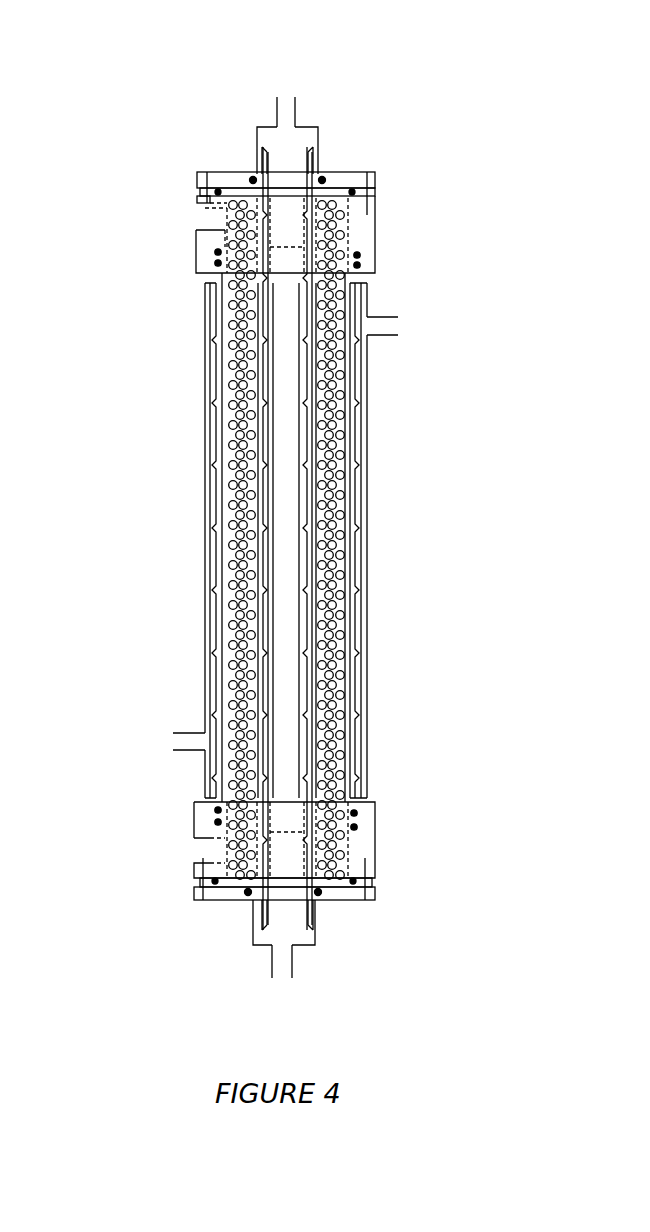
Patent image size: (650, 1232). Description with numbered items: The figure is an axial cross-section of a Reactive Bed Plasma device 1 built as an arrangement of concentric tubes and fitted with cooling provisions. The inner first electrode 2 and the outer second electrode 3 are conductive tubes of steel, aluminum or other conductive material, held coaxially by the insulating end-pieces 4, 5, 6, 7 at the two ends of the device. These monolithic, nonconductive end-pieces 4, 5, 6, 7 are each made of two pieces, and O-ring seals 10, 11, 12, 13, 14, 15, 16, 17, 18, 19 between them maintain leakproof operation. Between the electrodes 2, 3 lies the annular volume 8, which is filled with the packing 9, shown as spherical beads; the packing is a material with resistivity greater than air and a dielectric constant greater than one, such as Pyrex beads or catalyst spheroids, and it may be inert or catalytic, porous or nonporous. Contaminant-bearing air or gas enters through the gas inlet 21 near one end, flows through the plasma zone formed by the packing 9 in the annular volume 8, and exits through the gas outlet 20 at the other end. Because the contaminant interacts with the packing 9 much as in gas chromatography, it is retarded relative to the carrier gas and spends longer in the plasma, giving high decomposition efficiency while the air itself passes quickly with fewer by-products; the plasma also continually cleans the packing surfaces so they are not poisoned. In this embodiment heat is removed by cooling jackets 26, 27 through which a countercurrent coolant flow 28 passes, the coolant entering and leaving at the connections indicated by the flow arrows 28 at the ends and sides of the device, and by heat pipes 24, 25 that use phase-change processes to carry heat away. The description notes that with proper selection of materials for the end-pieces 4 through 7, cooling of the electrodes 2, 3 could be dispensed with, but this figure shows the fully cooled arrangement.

The plasma device 1 is at (430, 508).
The first electrode 2 is at (232, 502).
The second electrode 3 is at (227, 377).
The insulating end-piece 4 is at (194, 820).
The insulating end-piece 5 is at (197, 272).
The insulating end-piece 6 is at (230, 900).
The insulating end-piece 7 is at (228, 175).
The annular volume 8 is at (230, 598).
The packing 9 is at (230, 430).
The O-ring seal 10 is at (317, 900).
The O-ring seal 11 is at (322, 177).
The O-ring seal 12 is at (353, 885).
The O-ring seal 13 is at (372, 180).
The O-ring seal 14 is at (358, 828).
The O-ring seal 15 is at (360, 255).
The O-ring seal 16 is at (358, 813).
The O-ring seal 17 is at (360, 265).
The O-ring seal 18 is at (203, 867).
The O-ring seal 19 is at (207, 203).
The gas outlet 20 is at (193, 853).
The gas inlet 21 is at (170, 217).
The heat pipe 24 is at (303, 715).
The heat pipe 25 is at (358, 677).
The cooling jacket 26 is at (362, 622).
The cooling jacket 27 is at (287, 545).
The countercurrent coolant flow 28 is at (287, 95).